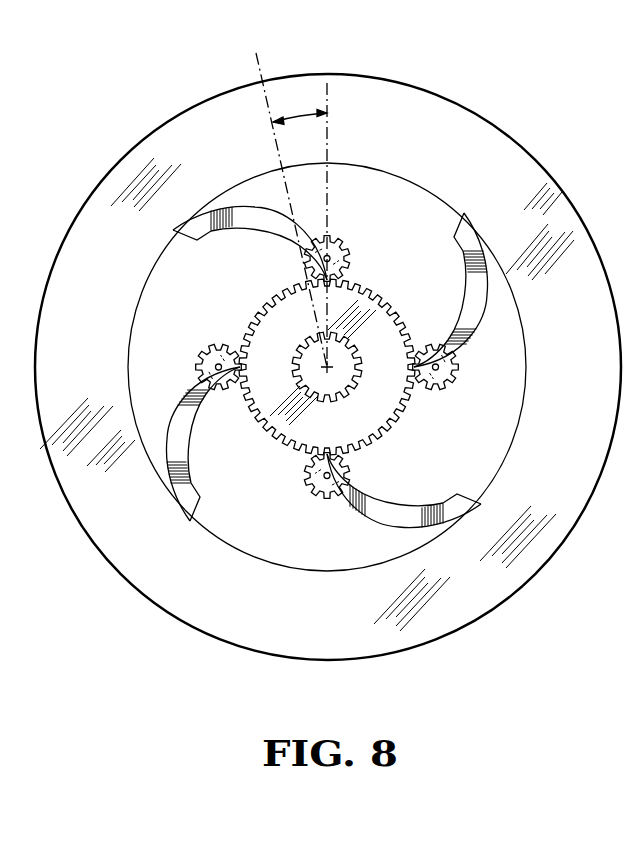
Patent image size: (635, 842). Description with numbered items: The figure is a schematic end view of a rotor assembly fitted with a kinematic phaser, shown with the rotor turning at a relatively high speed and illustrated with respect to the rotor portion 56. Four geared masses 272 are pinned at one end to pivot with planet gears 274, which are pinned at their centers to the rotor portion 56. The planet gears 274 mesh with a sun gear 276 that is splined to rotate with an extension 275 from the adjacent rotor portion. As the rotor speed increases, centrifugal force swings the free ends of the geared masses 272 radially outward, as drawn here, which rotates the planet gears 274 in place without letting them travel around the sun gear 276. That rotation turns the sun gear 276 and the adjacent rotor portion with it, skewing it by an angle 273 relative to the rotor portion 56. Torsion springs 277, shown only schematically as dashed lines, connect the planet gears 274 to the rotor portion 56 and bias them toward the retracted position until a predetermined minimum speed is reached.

The rotor portion 56 is at (140, 133).
The geared masses 272 is at (264, 207).
The angle 273 is at (297, 113).
The planet gears 274 is at (338, 238).
The extension 275 is at (310, 372).
The sun gear 276 is at (377, 323).
The torsion springs 277 is at (345, 262).